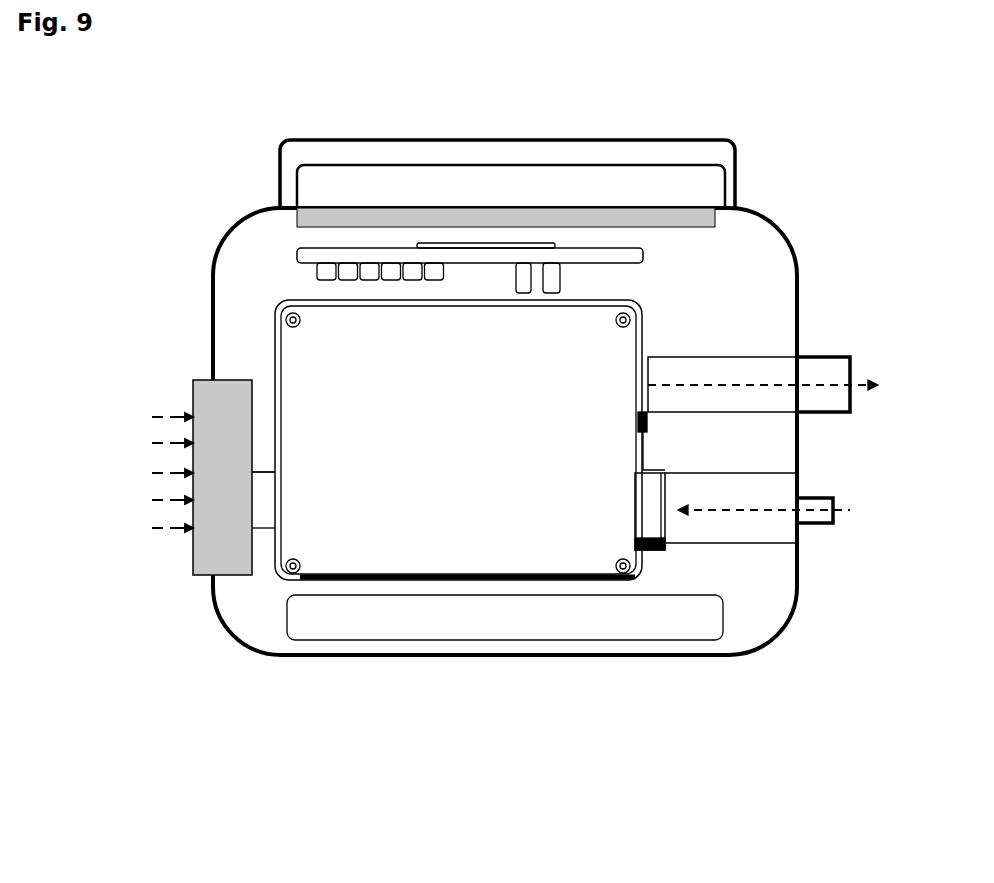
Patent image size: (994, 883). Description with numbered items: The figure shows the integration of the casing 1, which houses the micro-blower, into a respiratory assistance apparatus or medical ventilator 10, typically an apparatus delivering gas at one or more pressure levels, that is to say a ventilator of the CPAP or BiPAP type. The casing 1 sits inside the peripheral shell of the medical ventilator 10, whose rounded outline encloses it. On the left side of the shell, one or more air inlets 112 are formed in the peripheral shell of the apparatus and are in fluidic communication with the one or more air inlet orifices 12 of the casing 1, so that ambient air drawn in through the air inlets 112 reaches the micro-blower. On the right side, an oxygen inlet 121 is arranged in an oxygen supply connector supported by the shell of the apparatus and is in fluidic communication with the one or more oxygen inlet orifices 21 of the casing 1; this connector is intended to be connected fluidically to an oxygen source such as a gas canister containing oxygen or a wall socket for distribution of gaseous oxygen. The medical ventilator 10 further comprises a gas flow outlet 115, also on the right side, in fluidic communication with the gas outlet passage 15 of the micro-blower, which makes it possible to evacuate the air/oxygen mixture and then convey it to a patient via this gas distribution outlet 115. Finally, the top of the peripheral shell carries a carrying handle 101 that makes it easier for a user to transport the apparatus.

The casing 1 is at (405, 530).
The medical ventilator 10 is at (780, 227).
The carrying handle 101 is at (642, 145).
The air inlet orifices 12 is at (300, 488).
The gas outlet passage 15 is at (632, 385).
The oxygen inlet orifices 21 is at (657, 520).
The air inlets 112 is at (195, 552).
The gas flow outlet 115 is at (840, 352).
The oxygen inlet 121 is at (833, 523).